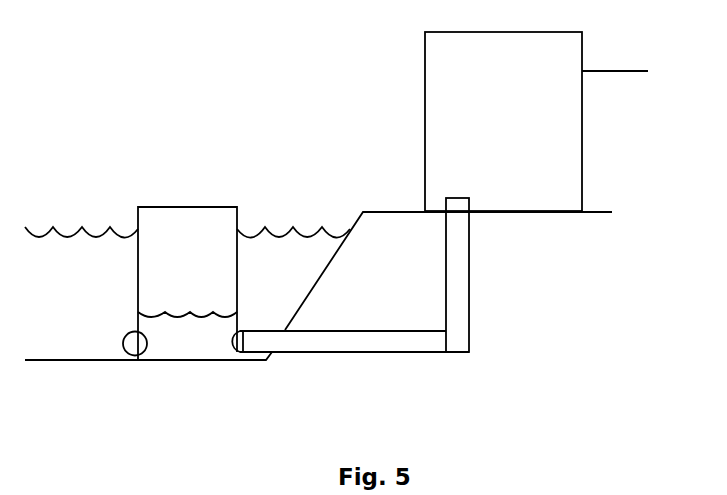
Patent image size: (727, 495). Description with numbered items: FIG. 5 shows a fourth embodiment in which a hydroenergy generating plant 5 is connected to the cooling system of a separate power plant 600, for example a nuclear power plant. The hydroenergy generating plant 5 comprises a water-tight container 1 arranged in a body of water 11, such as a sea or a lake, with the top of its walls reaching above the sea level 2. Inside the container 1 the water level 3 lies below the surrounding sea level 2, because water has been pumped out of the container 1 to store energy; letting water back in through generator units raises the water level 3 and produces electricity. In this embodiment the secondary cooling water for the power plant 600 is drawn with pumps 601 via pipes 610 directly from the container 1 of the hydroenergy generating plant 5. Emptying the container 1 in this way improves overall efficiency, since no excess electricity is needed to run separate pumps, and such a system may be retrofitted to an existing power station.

The water-tight container 1 is at (138, 207).
The sea level 2 is at (30, 239).
The water level in the container 3 is at (165, 315).
The hydroenergy generating plant 5 is at (173, 226).
The body of water 11 is at (60, 316).
The power plant 600 is at (425, 50).
The pumps 601 is at (231, 343).
The pipes 610 is at (469, 313).